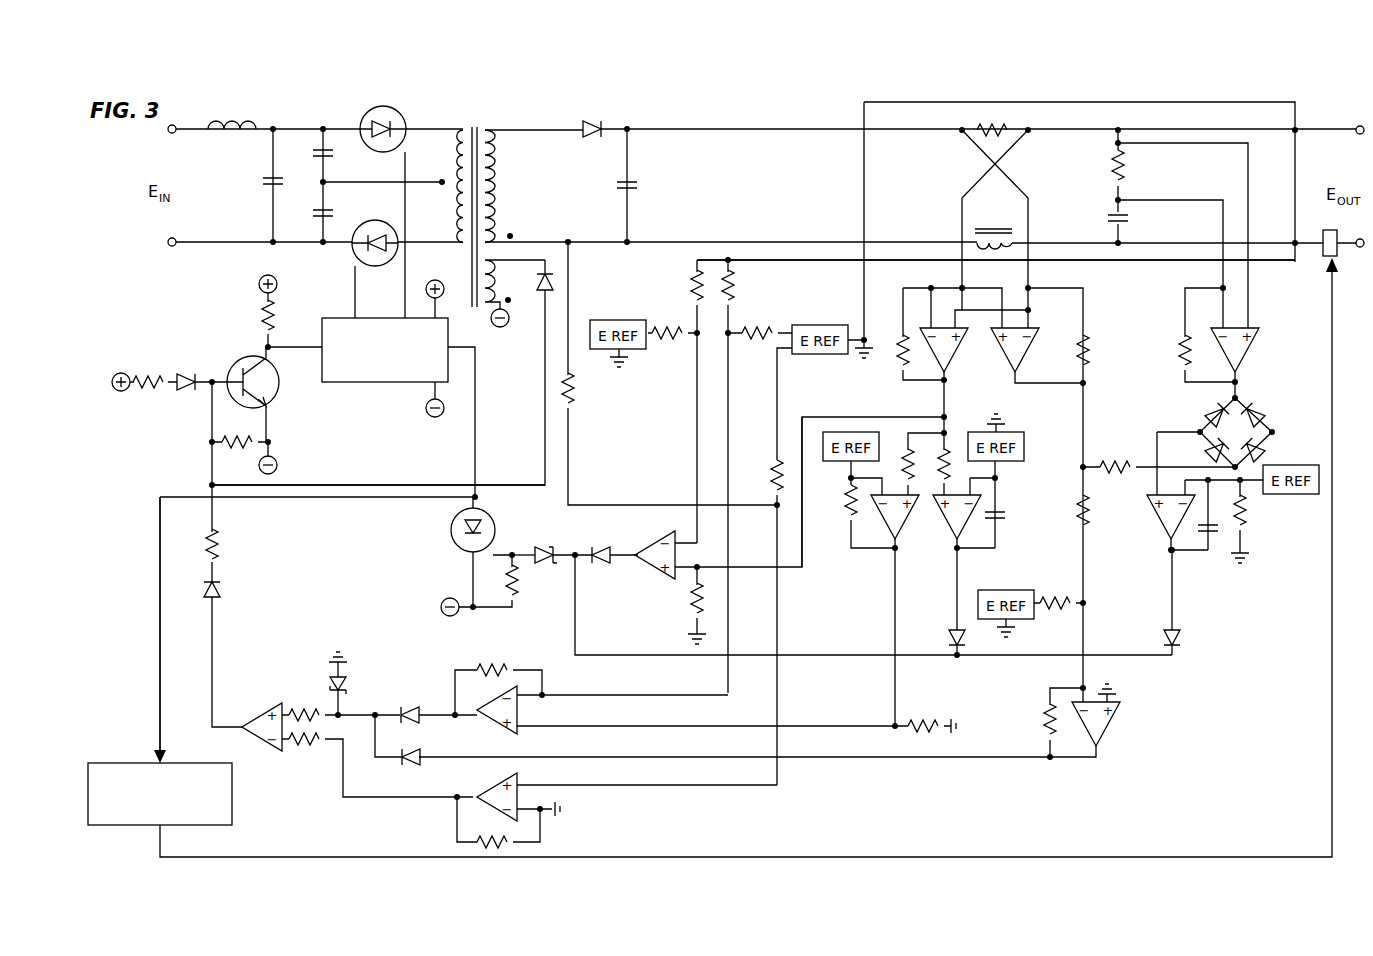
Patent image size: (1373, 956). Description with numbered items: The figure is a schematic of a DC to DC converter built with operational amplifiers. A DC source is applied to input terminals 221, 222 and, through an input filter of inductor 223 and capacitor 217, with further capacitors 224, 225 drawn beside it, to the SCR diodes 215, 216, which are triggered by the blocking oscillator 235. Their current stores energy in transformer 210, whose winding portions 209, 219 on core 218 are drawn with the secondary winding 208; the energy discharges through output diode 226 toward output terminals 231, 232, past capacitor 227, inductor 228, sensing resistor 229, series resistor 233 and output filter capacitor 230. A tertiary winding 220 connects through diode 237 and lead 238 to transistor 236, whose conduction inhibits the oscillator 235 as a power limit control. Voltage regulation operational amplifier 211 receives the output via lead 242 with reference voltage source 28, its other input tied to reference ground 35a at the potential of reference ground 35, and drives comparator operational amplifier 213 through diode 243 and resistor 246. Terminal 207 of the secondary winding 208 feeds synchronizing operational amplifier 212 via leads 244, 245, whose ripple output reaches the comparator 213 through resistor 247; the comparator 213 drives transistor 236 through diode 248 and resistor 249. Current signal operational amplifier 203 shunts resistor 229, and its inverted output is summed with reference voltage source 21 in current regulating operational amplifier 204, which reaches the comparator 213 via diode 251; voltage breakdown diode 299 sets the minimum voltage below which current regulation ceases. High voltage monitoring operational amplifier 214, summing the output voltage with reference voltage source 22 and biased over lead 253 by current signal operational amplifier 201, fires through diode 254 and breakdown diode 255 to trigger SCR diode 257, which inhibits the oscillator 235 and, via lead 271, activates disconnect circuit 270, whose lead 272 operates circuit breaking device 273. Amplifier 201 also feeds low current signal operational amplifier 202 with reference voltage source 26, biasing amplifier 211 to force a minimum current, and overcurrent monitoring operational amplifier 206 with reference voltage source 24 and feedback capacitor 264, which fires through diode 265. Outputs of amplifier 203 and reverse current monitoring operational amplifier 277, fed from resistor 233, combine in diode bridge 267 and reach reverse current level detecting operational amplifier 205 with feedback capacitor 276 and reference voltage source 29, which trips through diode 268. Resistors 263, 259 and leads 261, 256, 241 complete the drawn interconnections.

The input terminal 221 is at (173, 134).
The input terminal 222 is at (173, 247).
The inductor 223 is at (245, 120).
The capacitor 217 is at (296, 180).
The capacitor 224 is at (333, 154).
The capacitor 225 is at (333, 212).
The SCR diode 215 is at (400, 118).
The SCR diode 216 is at (380, 275).
The primary winding 209 is at (458, 156).
The primary winding 219 is at (458, 212).
The transformer core 218 is at (470, 127).
The transformer 210 is at (483, 125).
The secondary winding 208 is at (506, 179).
The terminal of secondary winding 207 is at (542, 240).
The tertiary winding 220 is at (515, 293).
The diode 237 is at (535, 301).
The output diode 226 is at (595, 120).
The output filter capacitor 227 is at (636, 182).
The sensing resistor 229 is at (1000, 120).
The output filter inductor 228 is at (990, 229).
The series connected resistor 233 is at (1128, 166).
The output filter capacitor 230 is at (1130, 218).
The output terminal 231 is at (1346, 126).
The output terminal 232 is at (1356, 256).
The circuit breaking device 273 is at (1326, 228).
The lead 272 is at (272, 857).
The lead 271 is at (156, 604).
The disconnect circuit 270 is at (122, 759).
The blocking oscillator 235 is at (372, 386).
The transistor 236 is at (248, 357).
The lead 238 is at (370, 477).
The lead 244 is at (569, 440).
The lead 242 is at (794, 262).
The reference voltage source 22 is at (618, 320).
The reference voltage source 28 is at (808, 324).
The reference ground 35 is at (866, 338).
The current signal operational amplifier 201 is at (952, 352).
The current signal operational amplifier 203 is at (1022, 352).
The resistor 263 is at (952, 432).
The resistor 259 is at (928, 498).
The reference voltage source 24 is at (1024, 442).
The reference voltage source 26 is at (838, 464).
The low current signal operational amplifier 202 is at (884, 528).
The overcurrent monitoring operational amplifier 206 is at (950, 546).
The feedback capacitor 264 is at (998, 514).
The diode 265 is at (950, 638).
The line 261 is at (892, 681).
The reference voltage source 21 is at (1006, 588).
The reference ground 35a is at (940, 724).
The current regulating operational amplifier 204 is at (1112, 714).
The reverse current monitoring operational amplifier 277 is at (1244, 356).
The diode bridge 267 is at (1236, 432).
The reverse current level detecting operational amplifier 205 is at (1160, 526).
The reference voltage source 29 is at (1290, 498).
The feedback capacitor 276 is at (1210, 550).
The diode 268 is at (1182, 638).
The SCR diode 257 is at (486, 514).
The line 256 is at (490, 550).
The breakdown diode 255 is at (538, 562).
The diode 254 is at (598, 547).
The high voltage monitoring operational amplifier 214 is at (656, 543).
The lead 253 is at (767, 566).
The lead 245 is at (779, 622).
The resistor 249 is at (226, 540).
The diode 248 is at (226, 586).
The comparator operational amplifier 213 is at (270, 708).
The resistor 246 is at (306, 702).
The voltage breakdown diode 299 is at (348, 678).
The diode 243 is at (410, 706).
The resistor 247 is at (312, 754).
The voltage regulation operational amplifier 211 is at (502, 724).
The line 241 is at (578, 692).
The diode 251 is at (410, 755).
The synchronizing operational amplifier 212 is at (495, 781).